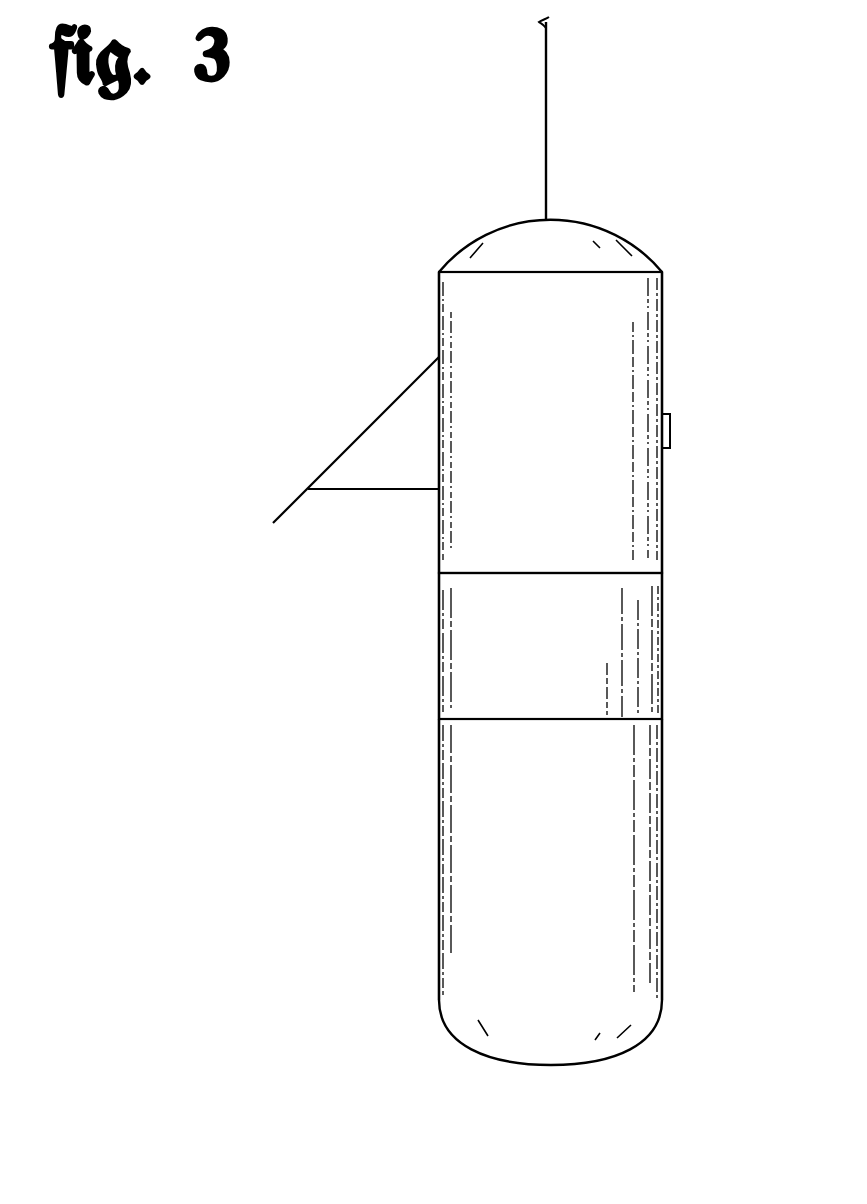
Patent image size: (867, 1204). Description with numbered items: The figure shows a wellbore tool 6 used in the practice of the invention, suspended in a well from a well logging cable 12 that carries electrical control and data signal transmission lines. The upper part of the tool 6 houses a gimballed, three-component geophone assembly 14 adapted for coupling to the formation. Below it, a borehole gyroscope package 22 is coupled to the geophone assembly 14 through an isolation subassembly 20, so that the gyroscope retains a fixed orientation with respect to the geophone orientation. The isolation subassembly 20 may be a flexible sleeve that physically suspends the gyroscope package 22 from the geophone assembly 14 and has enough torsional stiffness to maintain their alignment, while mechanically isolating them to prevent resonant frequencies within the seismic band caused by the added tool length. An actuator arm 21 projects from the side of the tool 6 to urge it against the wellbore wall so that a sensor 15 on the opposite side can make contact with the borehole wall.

The tool 6 is at (320, 823).
The well logging cable 12 is at (546, 140).
The geophone assembly 14 is at (666, 356).
The sensor 15 is at (671, 428).
The isolation subassembly 20 is at (663, 628).
The actuator arm 21 is at (364, 423).
The borehole gyroscope package 22 is at (664, 862).